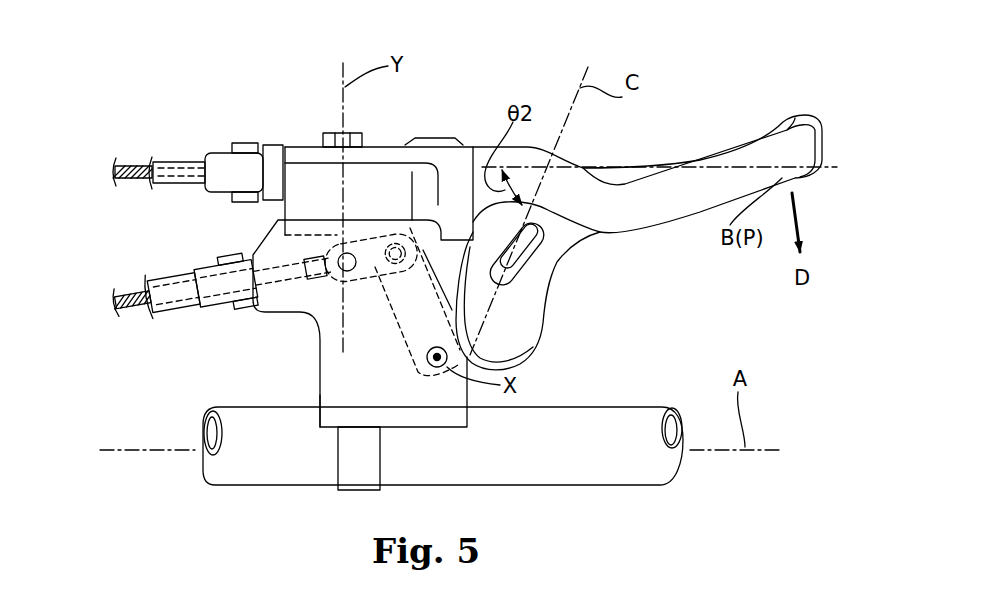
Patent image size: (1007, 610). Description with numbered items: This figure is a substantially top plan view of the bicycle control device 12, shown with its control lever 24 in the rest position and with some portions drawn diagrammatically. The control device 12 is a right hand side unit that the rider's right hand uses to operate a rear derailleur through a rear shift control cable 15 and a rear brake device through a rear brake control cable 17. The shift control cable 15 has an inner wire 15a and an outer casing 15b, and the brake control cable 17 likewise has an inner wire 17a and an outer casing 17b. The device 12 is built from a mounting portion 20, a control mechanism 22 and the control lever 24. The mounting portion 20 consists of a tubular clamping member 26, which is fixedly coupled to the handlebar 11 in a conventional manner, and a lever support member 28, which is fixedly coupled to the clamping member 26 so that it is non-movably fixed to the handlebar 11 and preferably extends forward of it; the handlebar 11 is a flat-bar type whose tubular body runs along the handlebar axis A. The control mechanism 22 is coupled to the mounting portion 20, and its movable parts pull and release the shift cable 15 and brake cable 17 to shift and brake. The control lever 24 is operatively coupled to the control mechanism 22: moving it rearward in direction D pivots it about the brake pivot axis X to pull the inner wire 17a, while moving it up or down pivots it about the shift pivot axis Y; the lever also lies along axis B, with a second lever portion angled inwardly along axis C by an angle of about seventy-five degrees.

The handlebar 11 is at (640, 407).
The bicycle control device 12 is at (598, 195).
The rear shift control cable 15 is at (198, 133).
The inner wire 15a is at (131, 163).
The outer casing 15b is at (190, 160).
The rear brake control cable 17 is at (265, 294).
The inner wire 17a is at (131, 300).
The outer casing 17b is at (171, 293).
The mounting portion 20 is at (265, 485).
The control mechanism 22 is at (266, 220).
The control lever 24 is at (727, 146).
The tubular clamping member 26 is at (337, 457).
The lever support member 28 is at (317, 385).